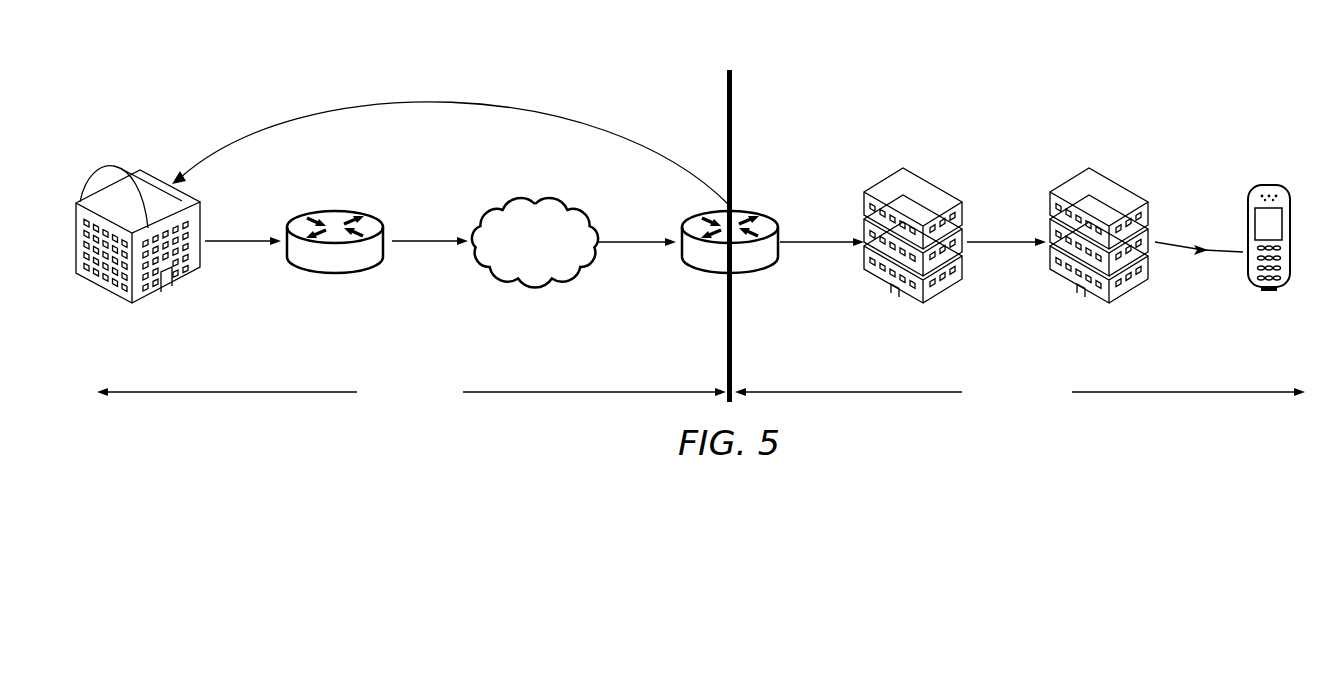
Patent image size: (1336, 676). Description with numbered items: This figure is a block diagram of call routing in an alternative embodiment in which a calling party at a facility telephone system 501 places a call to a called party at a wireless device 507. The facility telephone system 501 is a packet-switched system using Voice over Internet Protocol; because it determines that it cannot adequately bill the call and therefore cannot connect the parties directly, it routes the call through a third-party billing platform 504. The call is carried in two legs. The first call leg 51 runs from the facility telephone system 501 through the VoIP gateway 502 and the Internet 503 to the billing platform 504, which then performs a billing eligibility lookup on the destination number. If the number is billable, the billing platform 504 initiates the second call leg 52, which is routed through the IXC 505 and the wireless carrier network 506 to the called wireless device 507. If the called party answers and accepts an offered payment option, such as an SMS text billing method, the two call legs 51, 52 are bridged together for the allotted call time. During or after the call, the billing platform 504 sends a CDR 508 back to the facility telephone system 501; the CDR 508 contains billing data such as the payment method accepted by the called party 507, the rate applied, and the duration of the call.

The facility telephone system 501 is at (115, 182).
The VoIP gateway 502 is at (332, 211).
The Internet 503 is at (522, 203).
The billing platform 504 is at (746, 212).
The IXC 505 is at (930, 190).
The wireless carrier network 506 is at (1117, 190).
The wireless device 507 is at (1268, 185).
The CDR 508 is at (342, 108).
The first call leg 51 is at (233, 394).
The second call leg 52 is at (1195, 394).